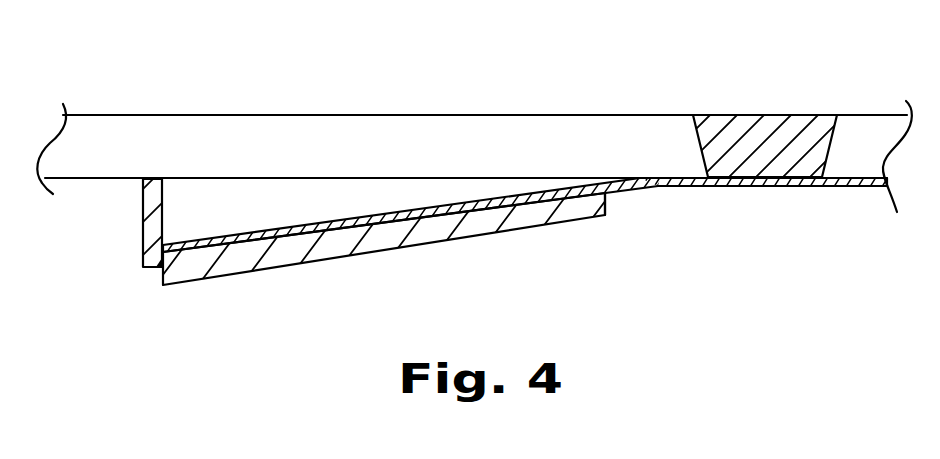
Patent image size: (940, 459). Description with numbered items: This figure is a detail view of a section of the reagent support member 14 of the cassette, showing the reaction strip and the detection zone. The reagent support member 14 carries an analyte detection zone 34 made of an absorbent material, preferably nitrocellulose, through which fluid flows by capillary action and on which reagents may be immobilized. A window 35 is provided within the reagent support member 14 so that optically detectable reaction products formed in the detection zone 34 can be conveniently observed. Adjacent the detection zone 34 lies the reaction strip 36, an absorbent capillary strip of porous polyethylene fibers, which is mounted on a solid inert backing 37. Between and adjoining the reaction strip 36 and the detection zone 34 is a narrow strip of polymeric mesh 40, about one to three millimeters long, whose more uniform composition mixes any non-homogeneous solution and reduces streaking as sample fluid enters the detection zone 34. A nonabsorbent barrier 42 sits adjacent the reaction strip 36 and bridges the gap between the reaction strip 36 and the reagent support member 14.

The reagent support member 14 is at (424, 103).
The analyte detection zone 34 is at (701, 195).
The window 35 is at (786, 102).
The reaction strip 36 is at (364, 262).
The solid inert backing 37 is at (293, 230).
The strip of polymeric mesh 40 is at (616, 203).
The nonabsorbent barrier 42 is at (129, 218).